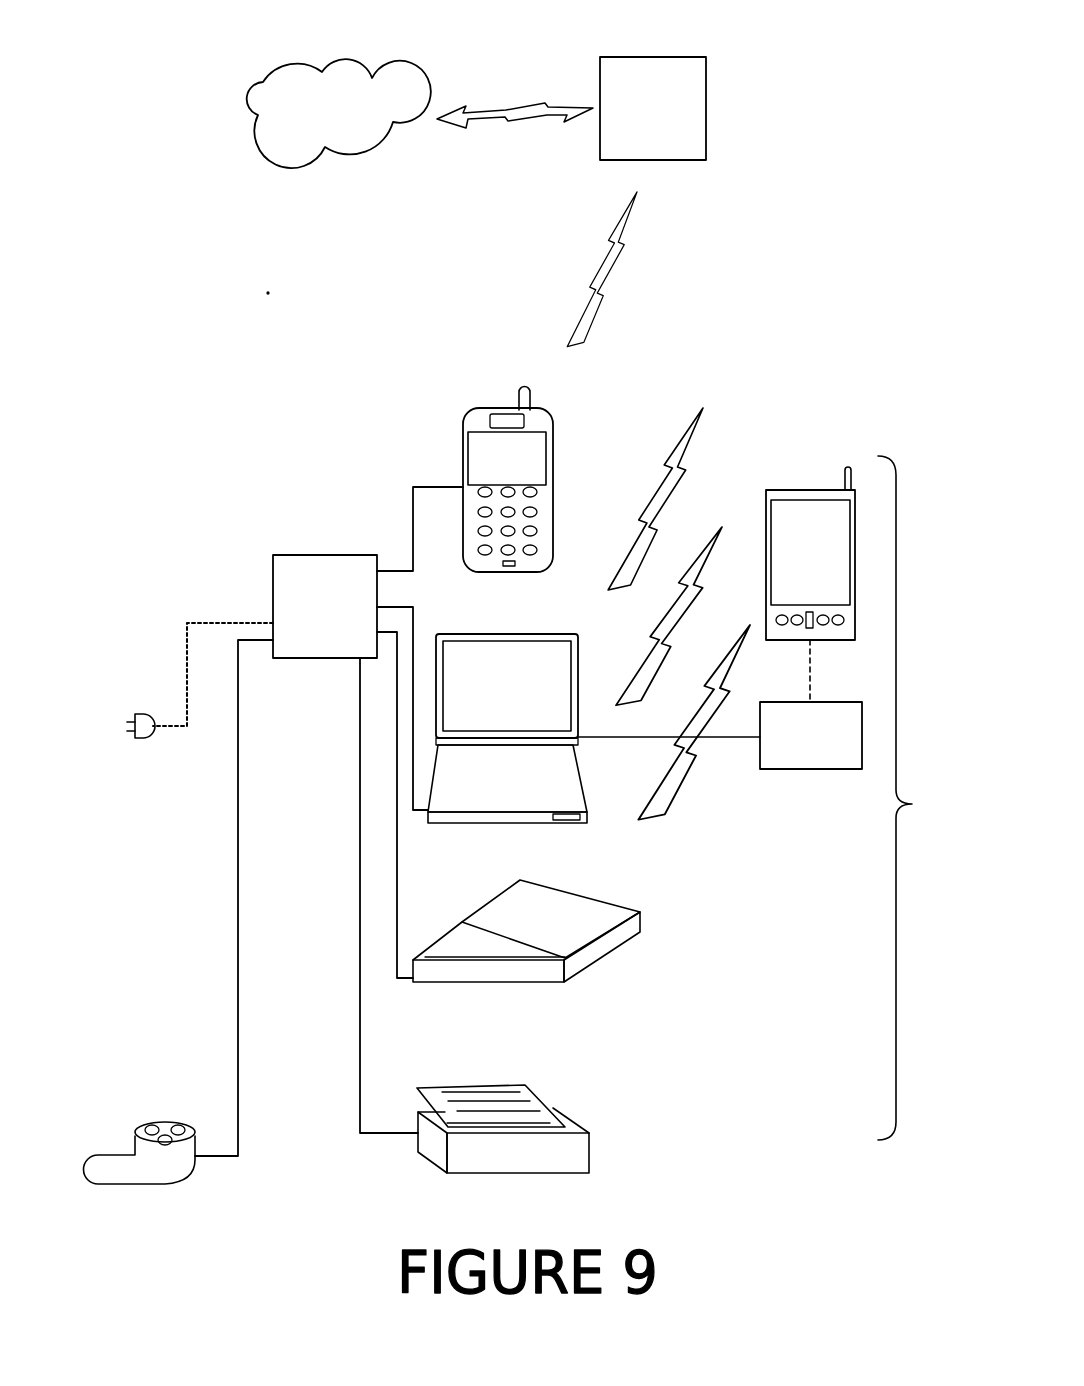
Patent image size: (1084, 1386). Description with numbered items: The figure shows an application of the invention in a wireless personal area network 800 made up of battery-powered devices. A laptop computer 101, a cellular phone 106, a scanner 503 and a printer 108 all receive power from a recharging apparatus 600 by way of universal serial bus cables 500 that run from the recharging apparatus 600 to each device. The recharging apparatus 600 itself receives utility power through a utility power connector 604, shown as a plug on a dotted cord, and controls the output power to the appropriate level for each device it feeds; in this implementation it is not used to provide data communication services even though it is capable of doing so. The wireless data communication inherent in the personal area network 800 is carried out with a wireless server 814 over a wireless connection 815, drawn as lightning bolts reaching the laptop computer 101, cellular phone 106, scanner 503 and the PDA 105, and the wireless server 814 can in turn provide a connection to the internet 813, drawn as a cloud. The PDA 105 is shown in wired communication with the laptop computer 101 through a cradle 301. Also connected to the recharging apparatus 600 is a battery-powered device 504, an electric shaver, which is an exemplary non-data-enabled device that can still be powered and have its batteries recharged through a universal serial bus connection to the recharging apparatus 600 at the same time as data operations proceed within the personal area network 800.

The internet 813 is at (325, 117).
The wireless server 814 is at (637, 117).
The connection 815 is at (660, 463).
The personal area network 800 is at (914, 798).
The cellular phone 106 is at (493, 469).
The laptop computer 101 is at (493, 697).
The PDA 105 is at (795, 577).
The cradle 301 is at (796, 749).
The recharging apparatus 600 is at (310, 618).
The universal serial bus cables 500 is at (397, 592).
The utility power connector 604 is at (237, 623).
The scanner 503 is at (530, 925).
The printer 108 is at (505, 1162).
The battery-powered device 504 is at (168, 1176).